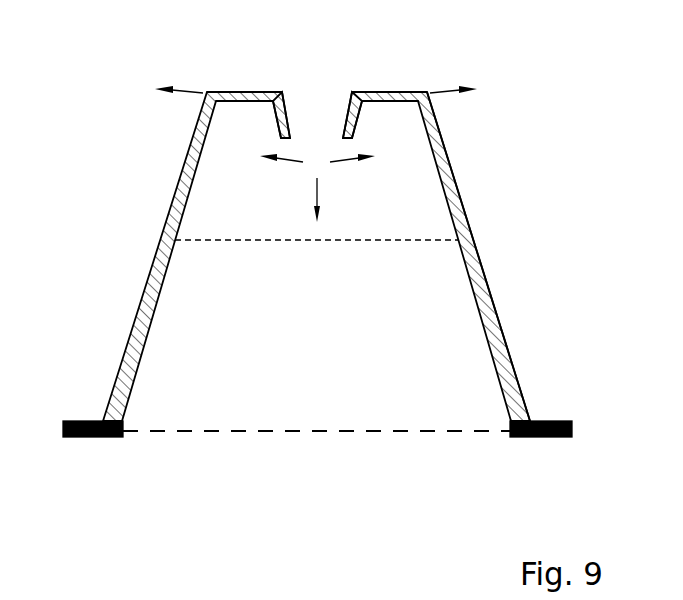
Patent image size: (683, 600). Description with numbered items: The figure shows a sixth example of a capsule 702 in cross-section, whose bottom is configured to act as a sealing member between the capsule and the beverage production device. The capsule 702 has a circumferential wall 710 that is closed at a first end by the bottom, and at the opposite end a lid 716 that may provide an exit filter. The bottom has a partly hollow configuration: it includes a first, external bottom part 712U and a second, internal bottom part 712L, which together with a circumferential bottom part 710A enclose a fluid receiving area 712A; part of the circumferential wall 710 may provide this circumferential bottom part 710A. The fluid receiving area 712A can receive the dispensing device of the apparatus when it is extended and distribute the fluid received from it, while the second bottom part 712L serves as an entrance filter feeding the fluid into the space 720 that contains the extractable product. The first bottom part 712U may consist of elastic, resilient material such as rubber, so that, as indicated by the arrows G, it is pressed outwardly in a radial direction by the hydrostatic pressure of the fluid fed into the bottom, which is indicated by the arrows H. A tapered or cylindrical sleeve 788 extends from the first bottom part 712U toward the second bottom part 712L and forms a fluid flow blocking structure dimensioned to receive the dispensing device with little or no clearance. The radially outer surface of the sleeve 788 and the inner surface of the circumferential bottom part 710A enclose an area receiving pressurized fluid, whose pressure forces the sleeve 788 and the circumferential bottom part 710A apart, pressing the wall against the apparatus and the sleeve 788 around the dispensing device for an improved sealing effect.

The capsule 702 is at (335, 264).
The circumferential wall 710 is at (141, 306).
The circumferential bottom part 710A is at (451, 172).
The first bottom part 712U is at (390, 91).
The fluid receiving area 712A is at (420, 226).
The second bottom part 712L is at (222, 241).
The lid 716 is at (404, 455).
The space 720 is at (337, 364).
The sleeve 788 is at (277, 121).